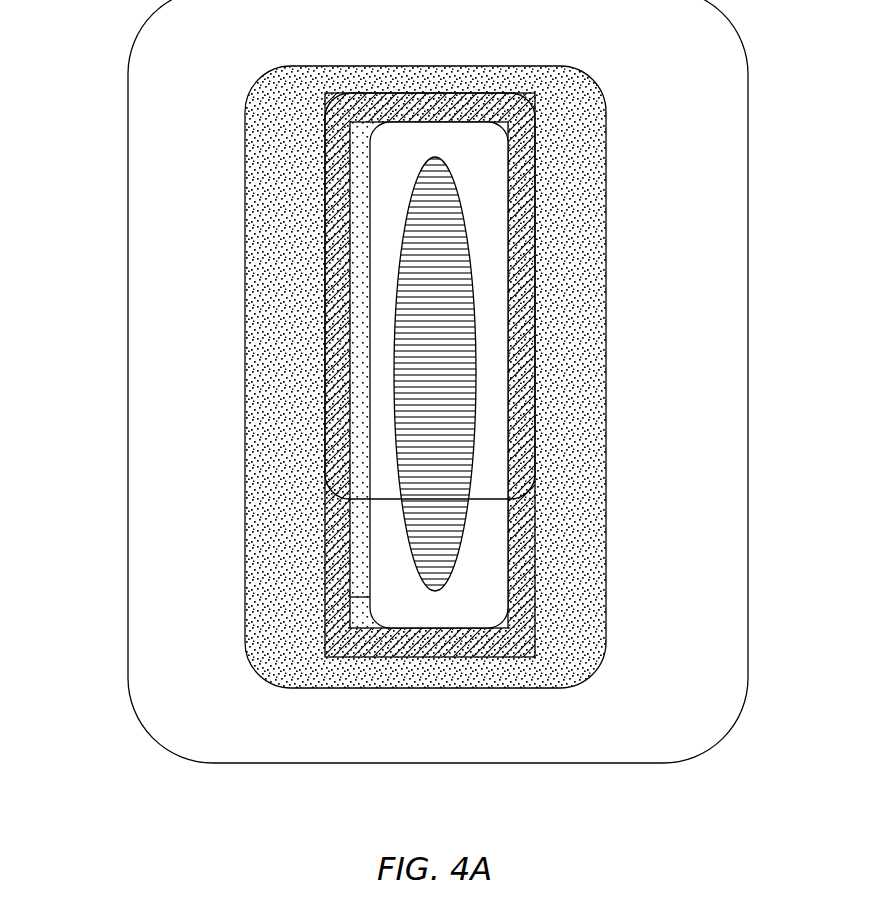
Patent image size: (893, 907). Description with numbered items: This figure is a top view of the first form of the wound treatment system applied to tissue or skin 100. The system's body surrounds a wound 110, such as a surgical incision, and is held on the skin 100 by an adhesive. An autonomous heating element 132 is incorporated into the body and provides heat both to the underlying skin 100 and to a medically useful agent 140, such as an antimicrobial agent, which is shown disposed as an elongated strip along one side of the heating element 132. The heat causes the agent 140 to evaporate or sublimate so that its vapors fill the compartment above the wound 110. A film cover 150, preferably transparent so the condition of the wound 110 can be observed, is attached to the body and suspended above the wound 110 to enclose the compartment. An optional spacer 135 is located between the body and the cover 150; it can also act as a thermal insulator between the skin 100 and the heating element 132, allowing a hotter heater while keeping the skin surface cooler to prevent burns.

The tissue or skin 100 is at (128, 327).
The wound 110 is at (393, 302).
The heating element 132 is at (245, 388).
The spacer 135 is at (323, 622).
The medically useful agent 140 is at (363, 600).
The film cover 150 is at (385, 502).